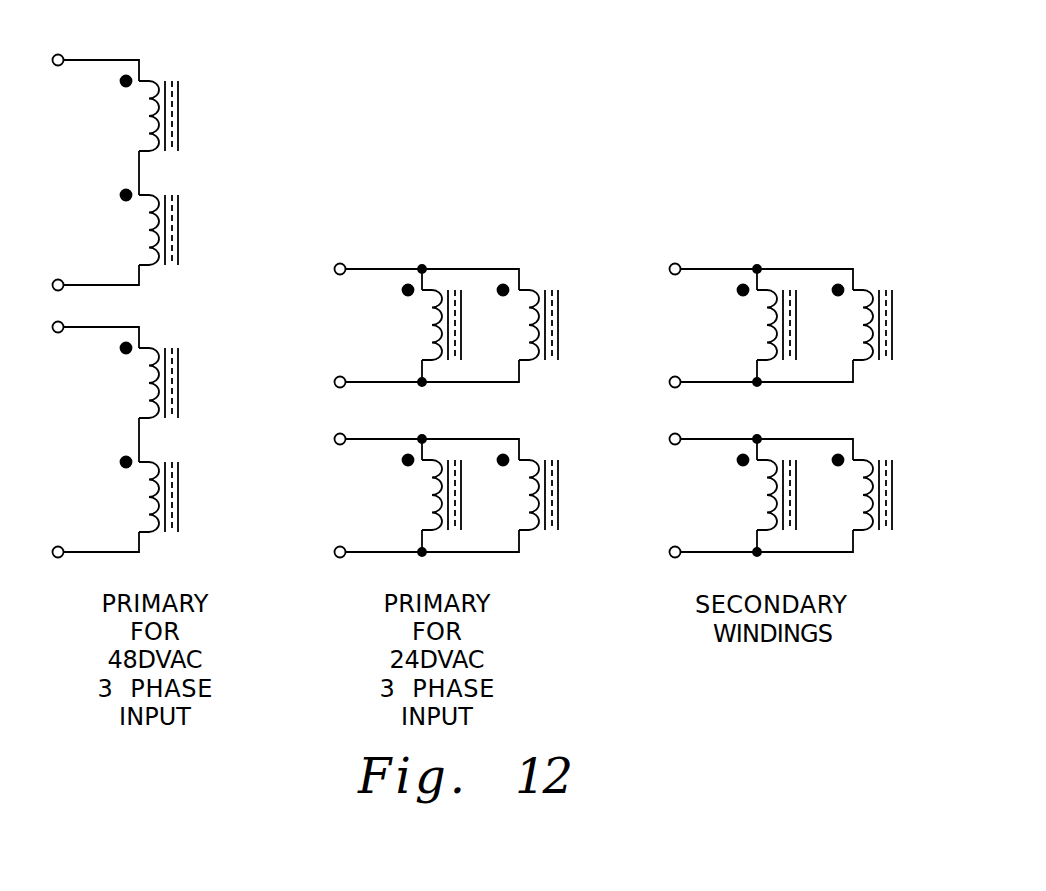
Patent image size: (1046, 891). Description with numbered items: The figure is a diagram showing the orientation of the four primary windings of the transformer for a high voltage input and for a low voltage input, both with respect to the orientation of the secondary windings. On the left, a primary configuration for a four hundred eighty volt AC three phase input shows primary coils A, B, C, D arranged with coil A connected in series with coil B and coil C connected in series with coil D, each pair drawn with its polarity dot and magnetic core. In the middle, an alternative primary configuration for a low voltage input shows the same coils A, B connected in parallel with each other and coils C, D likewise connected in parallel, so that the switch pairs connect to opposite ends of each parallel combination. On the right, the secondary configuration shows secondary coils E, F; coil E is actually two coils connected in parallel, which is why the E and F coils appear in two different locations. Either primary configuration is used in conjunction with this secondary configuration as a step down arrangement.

The primary coil A is at (303, 218).
The primary coil B is at (351, 275).
The primary coil C is at (303, 437).
The primary coil D is at (352, 494).
The secondary coil E is at (826, 323).
The secondary coil F is at (825, 493).